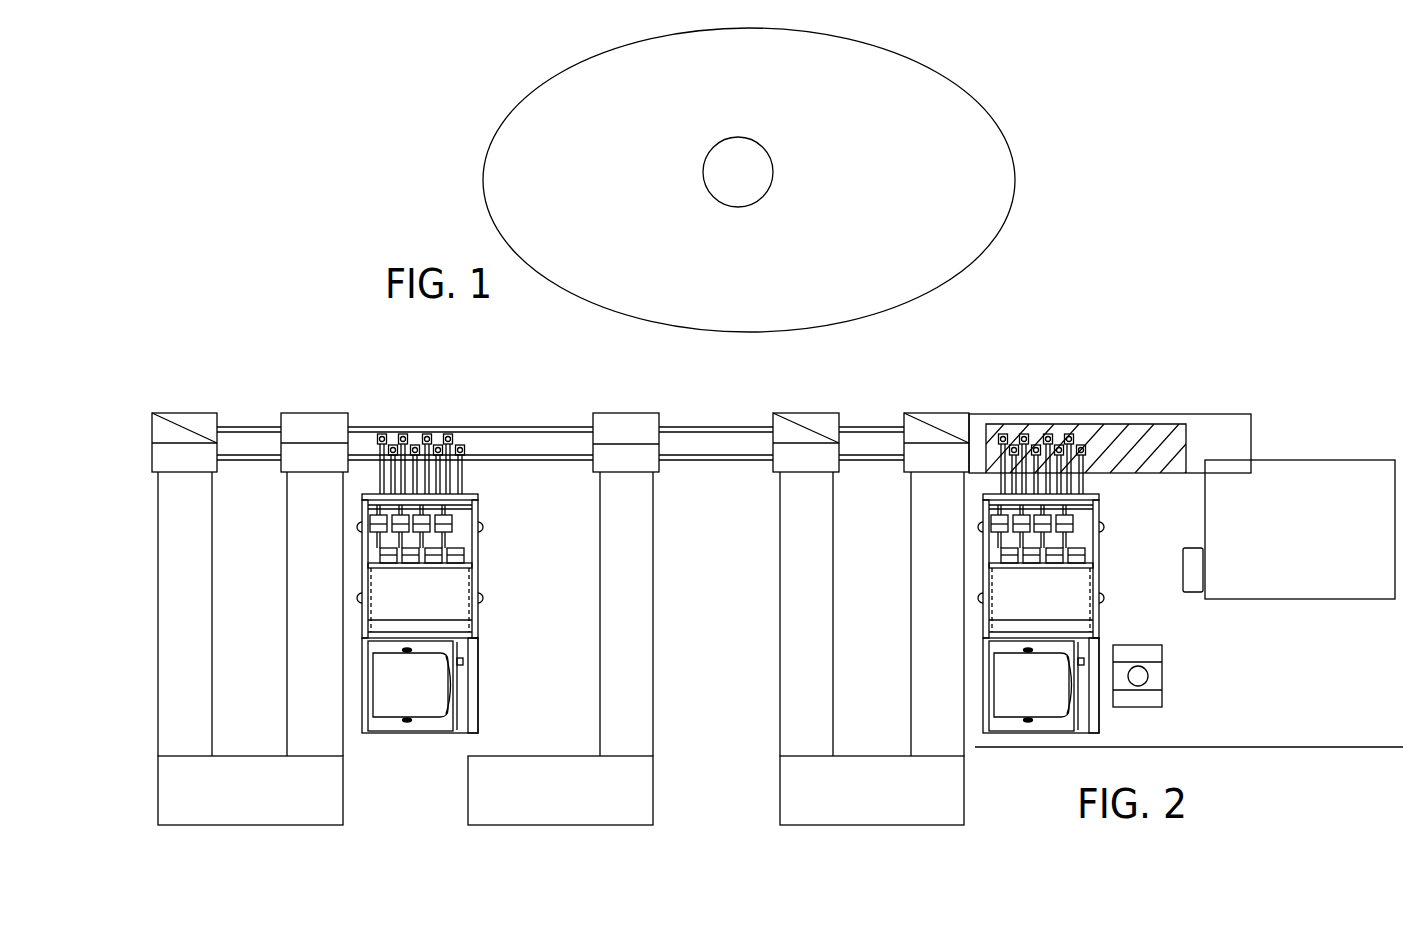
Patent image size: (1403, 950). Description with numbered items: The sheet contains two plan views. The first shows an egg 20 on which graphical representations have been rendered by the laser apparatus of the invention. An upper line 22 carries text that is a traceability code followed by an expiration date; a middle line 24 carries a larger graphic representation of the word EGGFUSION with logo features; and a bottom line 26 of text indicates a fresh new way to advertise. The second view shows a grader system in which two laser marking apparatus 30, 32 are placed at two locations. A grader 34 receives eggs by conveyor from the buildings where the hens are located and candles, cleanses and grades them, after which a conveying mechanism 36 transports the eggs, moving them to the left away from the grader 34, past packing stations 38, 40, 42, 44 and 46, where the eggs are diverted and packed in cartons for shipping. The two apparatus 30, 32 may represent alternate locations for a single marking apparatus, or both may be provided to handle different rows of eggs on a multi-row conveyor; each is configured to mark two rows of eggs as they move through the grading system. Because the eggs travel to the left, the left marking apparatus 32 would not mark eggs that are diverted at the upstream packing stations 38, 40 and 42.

In FIG. 1, the egg 20 is at (525, 98).
In FIG. 1, the upper line 22 is at (836, 96).
In FIG. 1, the middle line 24 is at (873, 177).
In FIG. 1, the bottom line 26 is at (885, 239).
In FIG. 2, the laser marking apparatus 30 is at (1119, 615).
In FIG. 2, the laser marking apparatus 32 is at (498, 622).
In FIG. 2, the grader 34 is at (1343, 458).
In FIG. 2, the conveying mechanism 36 is at (1065, 414).
In FIG. 2, the packing station 38 is at (938, 413).
In FIG. 2, the packing station 40 is at (802, 413).
In FIG. 2, the packing station 42 is at (616, 413).
In FIG. 2, the packing station 44 is at (325, 413).
In FIG. 2, the packing station 46 is at (182, 413).